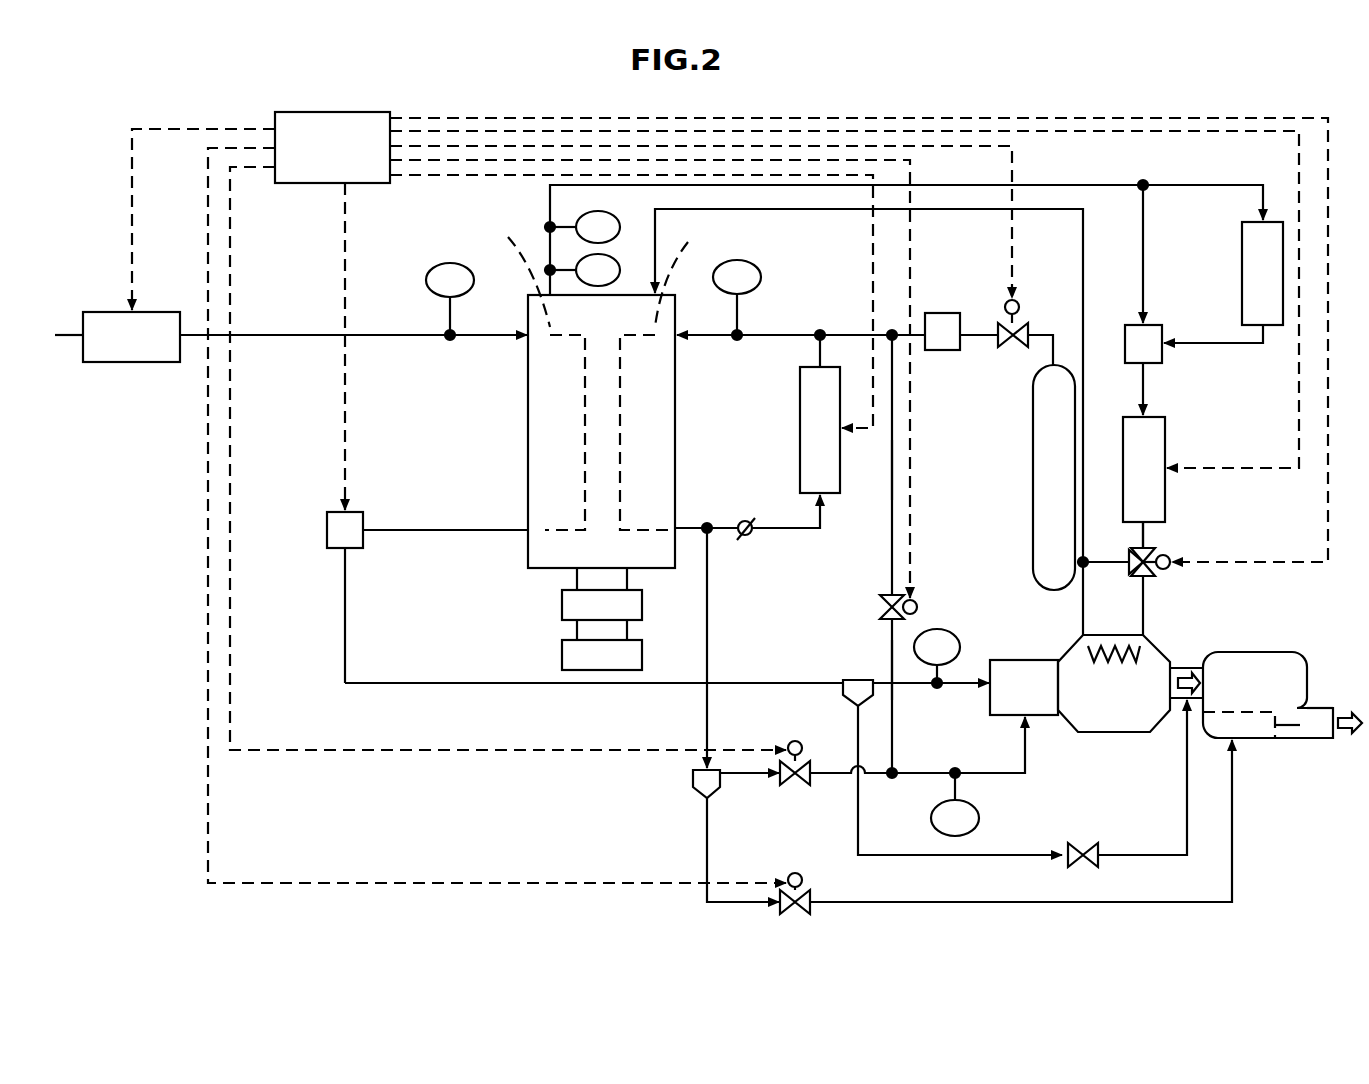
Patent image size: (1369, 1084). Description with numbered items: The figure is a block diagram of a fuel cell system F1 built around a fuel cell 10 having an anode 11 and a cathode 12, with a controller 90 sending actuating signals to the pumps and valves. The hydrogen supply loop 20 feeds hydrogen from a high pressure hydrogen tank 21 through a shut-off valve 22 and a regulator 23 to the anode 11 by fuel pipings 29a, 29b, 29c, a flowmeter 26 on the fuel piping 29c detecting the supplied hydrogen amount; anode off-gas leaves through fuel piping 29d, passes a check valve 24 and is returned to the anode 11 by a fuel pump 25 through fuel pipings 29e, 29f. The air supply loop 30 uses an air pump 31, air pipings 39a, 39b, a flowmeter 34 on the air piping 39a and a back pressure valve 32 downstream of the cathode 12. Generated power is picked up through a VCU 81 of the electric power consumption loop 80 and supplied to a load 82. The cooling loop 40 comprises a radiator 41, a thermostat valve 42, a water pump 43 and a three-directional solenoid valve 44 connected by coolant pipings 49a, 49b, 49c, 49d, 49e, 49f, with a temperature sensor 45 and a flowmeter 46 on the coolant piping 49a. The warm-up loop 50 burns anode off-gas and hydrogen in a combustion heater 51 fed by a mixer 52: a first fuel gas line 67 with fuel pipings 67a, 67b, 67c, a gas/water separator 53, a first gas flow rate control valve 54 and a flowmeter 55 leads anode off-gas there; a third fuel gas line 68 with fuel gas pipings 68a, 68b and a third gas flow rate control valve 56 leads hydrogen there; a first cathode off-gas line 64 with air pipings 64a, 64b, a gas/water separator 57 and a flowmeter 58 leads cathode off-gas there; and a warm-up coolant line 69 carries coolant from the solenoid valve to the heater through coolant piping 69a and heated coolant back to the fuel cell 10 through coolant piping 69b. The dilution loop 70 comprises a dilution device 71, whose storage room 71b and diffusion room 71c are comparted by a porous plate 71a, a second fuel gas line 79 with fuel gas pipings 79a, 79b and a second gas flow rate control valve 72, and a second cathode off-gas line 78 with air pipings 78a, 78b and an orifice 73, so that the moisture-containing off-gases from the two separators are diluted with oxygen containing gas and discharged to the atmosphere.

The fuel cell system F1 is at (897, 98).
The controller 90 is at (333, 112).
The air pump 31 is at (97, 312).
The air supply loop 30 is at (183, 374).
The air piping 39a is at (398, 335).
The flowmeter 34 is at (428, 270).
The cathode 12 is at (501, 370).
The flowmeter 46 is at (600, 211).
The temperature sensor 45 is at (616, 258).
The anode 11 is at (687, 373).
The flowmeter 26 is at (760, 270).
The fuel cell 10 is at (548, 575).
The electric power consumption loop 80 is at (548, 610).
The VCU 81 is at (642, 606).
The load 82 is at (642, 656).
The back pressure valve 32 is at (327, 522).
The air piping 39b is at (472, 530).
The air piping 64a is at (345, 588).
The first cathode off-gas line 64 is at (384, 694).
The air piping 64b is at (958, 690).
The coolant piping 49a is at (1083, 185).
The coolant piping 49e is at (1083, 237).
The coolant piping 49f is at (1145, 283).
The radiator 41 is at (1242, 240).
The coolant piping 49b is at (1262, 343).
The thermostat valve 42 is at (1162, 328).
The coolant piping 49c is at (1145, 386).
The water pump 43 is at (1165, 432).
The coolant piping 49d is at (1145, 538).
The three-directional solenoid valve 44 is at (1140, 590).
The cooling loop 40 is at (1237, 503).
The warm-up loop 50 is at (1182, 603).
The fuel piping 29c is at (845, 335).
The regulator 23 is at (932, 313).
The fuel piping 29b is at (975, 335).
The shut-off valve 22 is at (1025, 322).
The fuel piping 29a is at (1053, 350).
The high pressure hydrogen tank 21 is at (1033, 425).
The fuel piping 29f is at (820, 354).
The fuel pump 25 is at (800, 420).
The fuel piping 29d is at (710, 528).
The check valve 24 is at (742, 520).
The fuel piping 29e is at (778, 528).
The hydrogen supply loop 20 is at (857, 560).
The third fuel gas line 68 is at (921, 577).
The fuel gas piping 68a is at (892, 462).
The third gas flow rate control valve 56 is at (880, 612).
The fuel gas piping 68b is at (892, 664).
The flowmeter 58 is at (948, 630).
The fuel piping 67a is at (707, 646).
The gas/water separator 53 is at (693, 790).
The gas/water separator 57 is at (846, 700).
The fuel piping 67b is at (743, 775).
The first gas flow rate control valve 54 is at (808, 782).
The fuel piping 67c is at (917, 773).
The first fuel gas line 67 is at (999, 787).
The flowmeter 55 is at (931, 818).
The mixer 52 is at (992, 660).
The combustion heater 51 is at (1098, 735).
The warm-up coolant line 69 is at (1063, 615).
The coolant piping 69b is at (1083, 630).
The coolant piping 69a is at (1145, 630).
The dilution device 71 is at (1285, 652).
The diffusion room 71c is at (1258, 652).
The porous plate 71a is at (1308, 710).
The storage room 71b is at (1250, 740).
The dilution loop 70 is at (1280, 762).
The air piping 78a is at (965, 856).
The orifice 73 is at (1095, 850).
The air piping 78b is at (1165, 855).
The second cathode off-gas line 78 is at (1128, 862).
The fuel gas piping 79a is at (722, 903).
The second gas flow rate control valve 72 is at (808, 912).
The fuel gas piping 79b is at (1115, 903).
The second fuel gas line 79 is at (1070, 912).